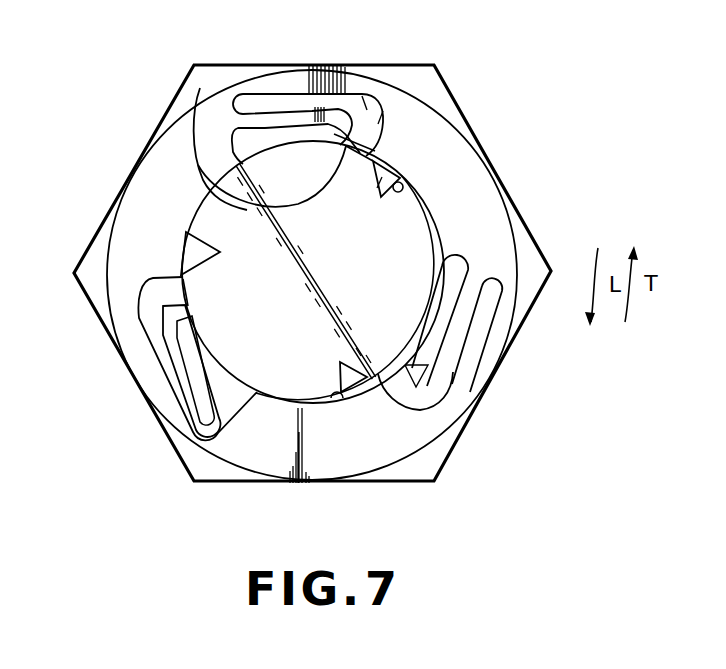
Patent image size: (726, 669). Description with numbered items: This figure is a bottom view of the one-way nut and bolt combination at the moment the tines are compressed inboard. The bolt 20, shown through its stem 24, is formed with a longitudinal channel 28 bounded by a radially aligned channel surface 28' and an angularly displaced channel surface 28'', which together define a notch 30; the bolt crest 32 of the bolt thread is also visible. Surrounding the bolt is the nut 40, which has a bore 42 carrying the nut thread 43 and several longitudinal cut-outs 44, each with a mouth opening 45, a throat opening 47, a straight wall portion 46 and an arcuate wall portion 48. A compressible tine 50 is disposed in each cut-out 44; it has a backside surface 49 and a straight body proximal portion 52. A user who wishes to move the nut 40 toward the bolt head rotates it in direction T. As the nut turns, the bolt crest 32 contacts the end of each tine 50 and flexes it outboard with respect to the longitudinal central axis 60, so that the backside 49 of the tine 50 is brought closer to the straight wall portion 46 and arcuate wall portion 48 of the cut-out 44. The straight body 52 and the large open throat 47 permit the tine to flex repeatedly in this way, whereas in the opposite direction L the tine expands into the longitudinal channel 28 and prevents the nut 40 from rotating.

The bolt 20 is at (289, 383).
The stem 24 is at (373, 322).
The longitudinal channel 28 is at (454, 138).
The radially aligned channel surface 28' is at (484, 169).
The angularly displaced channel surface 28'' is at (447, 85).
The notch 30 is at (382, 177).
The bolt crest 32 is at (352, 400).
The nut 40 is at (553, 250).
The bore 42 is at (333, 402).
The nut thread 43 is at (193, 140).
The longitudinal cut-out 44 is at (277, 98).
The mouth opening 45 is at (237, 210).
The straight wall portion 46 is at (361, 94).
The throat opening 47 is at (372, 96).
The arcuate wall portion 48 is at (378, 163).
The backside surface 49 is at (255, 97).
The compressible tine 50 is at (238, 93).
The straight body proximal portion 52 is at (310, 65).
The longitudinal central axis 60 is at (310, 273).